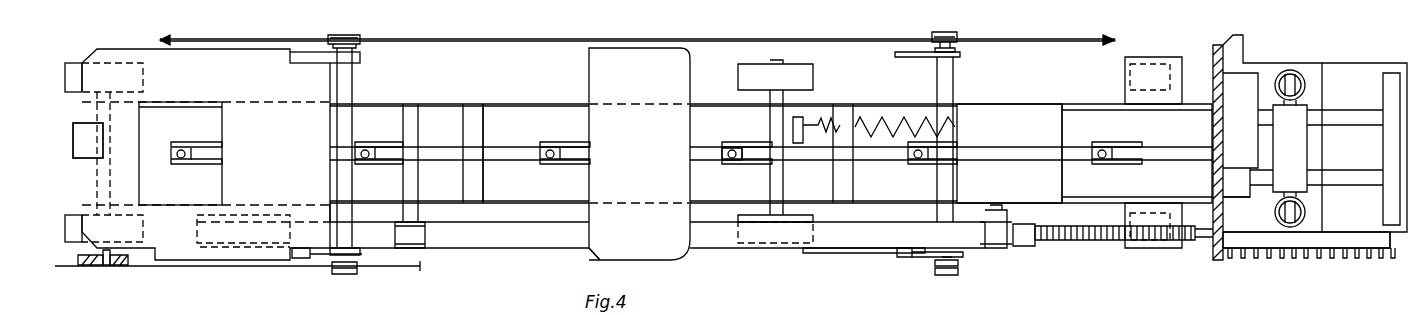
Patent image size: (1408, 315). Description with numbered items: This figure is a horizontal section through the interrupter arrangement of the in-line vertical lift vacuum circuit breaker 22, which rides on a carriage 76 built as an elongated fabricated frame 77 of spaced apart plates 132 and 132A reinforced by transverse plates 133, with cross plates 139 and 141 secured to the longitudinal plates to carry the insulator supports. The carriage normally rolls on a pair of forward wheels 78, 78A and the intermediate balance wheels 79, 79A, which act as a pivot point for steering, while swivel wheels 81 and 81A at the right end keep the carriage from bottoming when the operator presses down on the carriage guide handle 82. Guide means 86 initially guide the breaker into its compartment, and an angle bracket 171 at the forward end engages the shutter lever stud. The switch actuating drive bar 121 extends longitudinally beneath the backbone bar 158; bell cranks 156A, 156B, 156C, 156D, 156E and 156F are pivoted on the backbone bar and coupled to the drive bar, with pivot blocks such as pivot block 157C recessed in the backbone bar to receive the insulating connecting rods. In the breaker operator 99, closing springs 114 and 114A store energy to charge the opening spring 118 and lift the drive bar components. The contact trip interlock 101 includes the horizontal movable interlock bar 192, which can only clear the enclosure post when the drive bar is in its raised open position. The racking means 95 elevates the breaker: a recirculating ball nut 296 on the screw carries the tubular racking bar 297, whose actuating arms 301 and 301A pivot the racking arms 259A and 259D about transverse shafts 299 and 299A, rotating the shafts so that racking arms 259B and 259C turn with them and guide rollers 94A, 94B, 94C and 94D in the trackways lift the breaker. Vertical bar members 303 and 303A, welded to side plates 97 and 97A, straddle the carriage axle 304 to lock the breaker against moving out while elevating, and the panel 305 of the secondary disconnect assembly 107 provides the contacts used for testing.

The vacuum circuit breaker 22 is at (572, 266).
The carriage 76 is at (462, 104).
The frame 77 is at (497, 104).
The forward wheels 78 is at (72, 215).
The forward wheel 78A is at (74, 62).
The balance wheels 79 is at (748, 243).
The balance wheel 79A is at (742, 64).
The swivel wheel 81 is at (1148, 238).
The swivel wheel 81A is at (1150, 66).
The carriage guide handle 82 is at (1390, 74).
The guide means 86 is at (139, 48).
The guide roller 94A is at (338, 274).
The guide roller 94B is at (350, 34).
The guide roller 94C is at (954, 32).
The guide roller 94D is at (948, 274).
The circuit breaker racking means 95 is at (1085, 266).
The side plate 97 is at (408, 268).
The side plate 97A is at (502, 40).
The breaker operator 99 is at (1235, 272).
The contact trip interlock 101 is at (1270, 30).
The secondary disconnect assembly 107 is at (1345, 286).
The closing spring 114 is at (1306, 212).
The closing spring 114A is at (1306, 85).
The opening spring 118 is at (878, 104).
The switch actuating drive bar 121 is at (502, 146).
The frame plate 132 is at (516, 206).
The frame plate 132A is at (400, 104).
The transverse plate 133 is at (478, 186).
The cross plate 139 is at (1014, 104).
The cross plate 141 is at (590, 75).
The bell crank 156A is at (1124, 166).
The bell crank 156B is at (943, 165).
The bell crank 156C is at (742, 165).
The bell crank 156D is at (570, 165).
The bell crank 156E is at (363, 164).
The bell crank 156F is at (196, 165).
The pivot block 157C is at (723, 148).
The backbone bar 158 is at (434, 148).
The angle bracket 171 is at (92, 138).
The interlock bar 192 is at (1243, 62).
The racking arm 259A is at (306, 258).
The racking arm 259B is at (305, 52).
The racking arm 259C is at (906, 52).
The racking arm 259D is at (906, 258).
The recirculating ball nut 296 is at (1022, 244).
The tubular racking bar 297 is at (470, 242).
The transverse shaft 299 is at (343, 196).
The transverse shaft 299A is at (940, 187).
The actuating arm 301 is at (240, 250).
The actuating arm 301A is at (822, 252).
The vertical bar member 303 is at (118, 266).
The vertical bar member 303A is at (80, 266).
The carriage axle 304 is at (106, 266).
The secondary disconnect panel 305 is at (1305, 258).